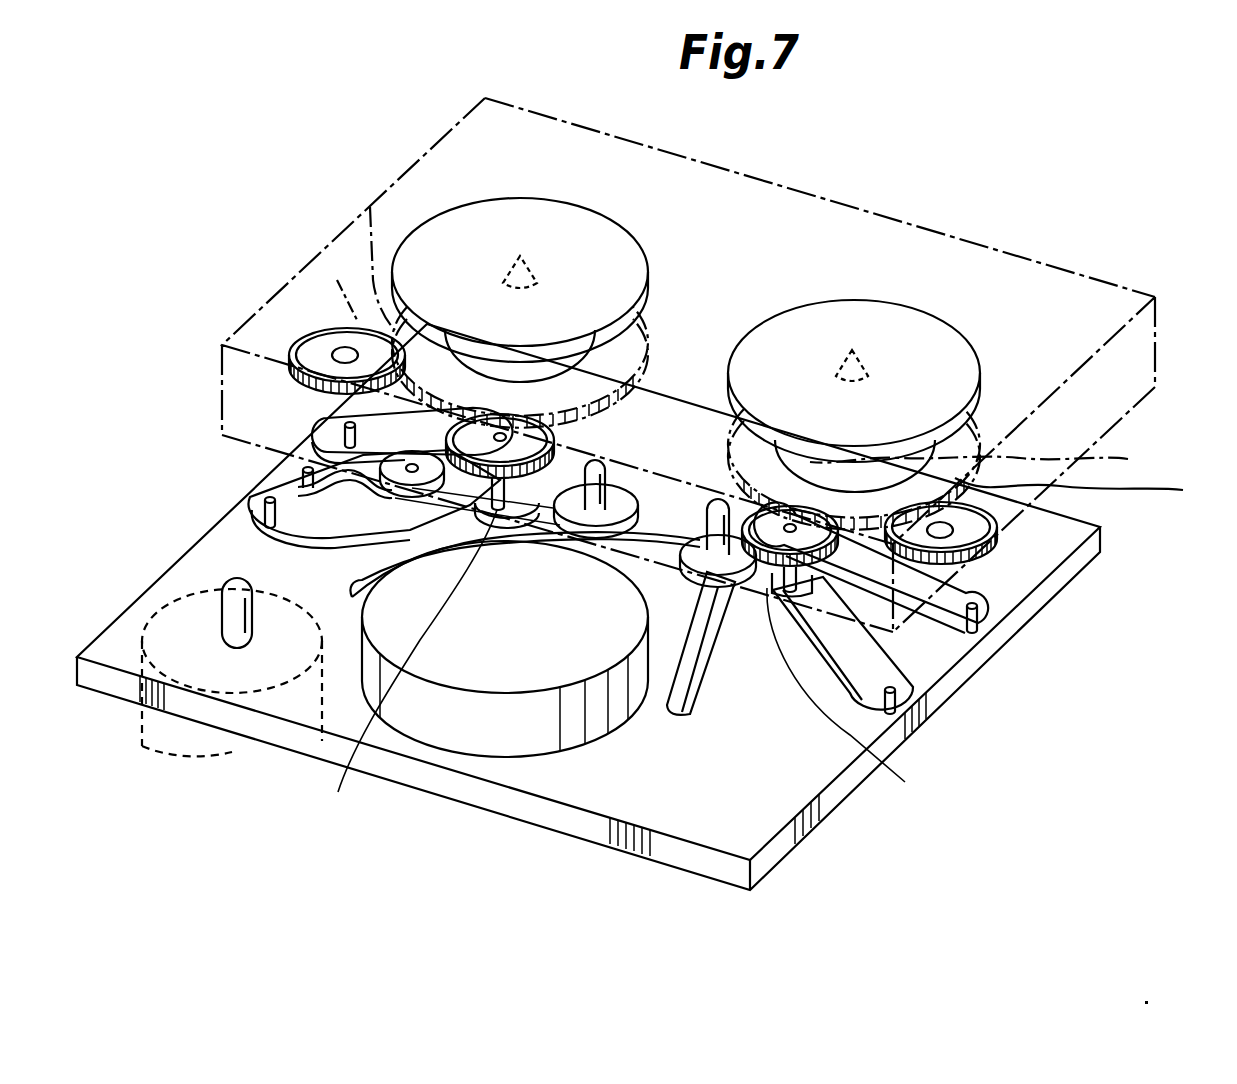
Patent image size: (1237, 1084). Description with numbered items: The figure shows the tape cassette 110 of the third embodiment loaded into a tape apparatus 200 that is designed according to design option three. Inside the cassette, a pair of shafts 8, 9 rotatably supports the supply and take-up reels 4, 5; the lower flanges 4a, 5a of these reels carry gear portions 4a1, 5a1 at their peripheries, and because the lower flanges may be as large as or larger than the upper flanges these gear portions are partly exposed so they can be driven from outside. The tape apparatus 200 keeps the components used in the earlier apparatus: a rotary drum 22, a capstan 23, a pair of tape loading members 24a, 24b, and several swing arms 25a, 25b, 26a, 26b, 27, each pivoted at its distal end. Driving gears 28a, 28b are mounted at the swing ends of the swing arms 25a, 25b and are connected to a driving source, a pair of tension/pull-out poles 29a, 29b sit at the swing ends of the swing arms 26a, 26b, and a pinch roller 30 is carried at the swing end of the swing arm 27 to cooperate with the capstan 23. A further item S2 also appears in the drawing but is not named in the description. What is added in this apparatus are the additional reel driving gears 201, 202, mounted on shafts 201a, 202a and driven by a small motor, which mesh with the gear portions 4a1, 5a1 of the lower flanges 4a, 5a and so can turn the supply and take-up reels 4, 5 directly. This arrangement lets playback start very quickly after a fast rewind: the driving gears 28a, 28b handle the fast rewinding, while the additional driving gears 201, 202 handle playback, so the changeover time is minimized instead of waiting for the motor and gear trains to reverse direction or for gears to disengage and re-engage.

The cassette 110 is at (906, 154).
The tape apparatus 200 is at (148, 487).
The supply reel 4 is at (953, 327).
The lower flange 4a is at (986, 454).
The gear portion 4a1 is at (1090, 484).
The take-up reel 5 is at (622, 228).
The lower flange 5a is at (370, 207).
The gear portion 5a1 is at (337, 280).
The shaft 8 is at (853, 352).
The shaft 9 is at (523, 250).
The rotary drum 22 is at (430, 710).
The capstan 23 is at (235, 613).
The tape loading member 24a is at (728, 500).
The tape loading member 24b is at (600, 463).
The swing arm 25a is at (967, 582).
The swing arm 25b is at (290, 363).
The swing arm 26a is at (903, 683).
The swing arm 26b is at (320, 453).
The swing arm 27 is at (303, 521).
The driving gear 28a is at (900, 617).
The driving gear 28b is at (313, 357).
The tension/pull-out pole 29a is at (862, 694).
The tension/pull-out pole 29b is at (384, 668).
The pinch roller 30 is at (412, 468).
The spring S2 is at (290, 370).
The additional reel driving gear 201 is at (967, 540).
The shaft 201a is at (950, 528).
The additional reel driving gear 202 is at (327, 373).
The shaft 202a is at (343, 347).